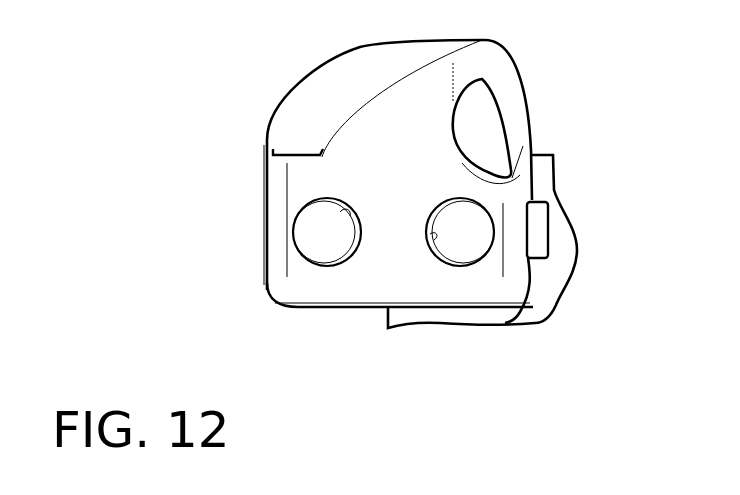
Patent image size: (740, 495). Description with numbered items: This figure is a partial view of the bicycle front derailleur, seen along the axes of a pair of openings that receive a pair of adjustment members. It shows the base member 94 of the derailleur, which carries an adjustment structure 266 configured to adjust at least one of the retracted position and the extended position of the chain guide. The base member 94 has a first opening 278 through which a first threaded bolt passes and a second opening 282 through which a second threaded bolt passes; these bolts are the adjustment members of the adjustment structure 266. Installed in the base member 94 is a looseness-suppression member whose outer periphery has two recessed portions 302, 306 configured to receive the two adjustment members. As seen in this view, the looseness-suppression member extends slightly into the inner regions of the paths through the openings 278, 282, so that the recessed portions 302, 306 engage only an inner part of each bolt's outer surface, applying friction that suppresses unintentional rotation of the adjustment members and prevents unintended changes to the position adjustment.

The base member 94 is at (295, 97).
The adjustment structure 266 is at (195, 220).
The first opening 278 is at (301, 254).
The second opening 282 is at (488, 252).
The recessed portion 302 is at (340, 210).
The recessed portion 306 is at (433, 239).